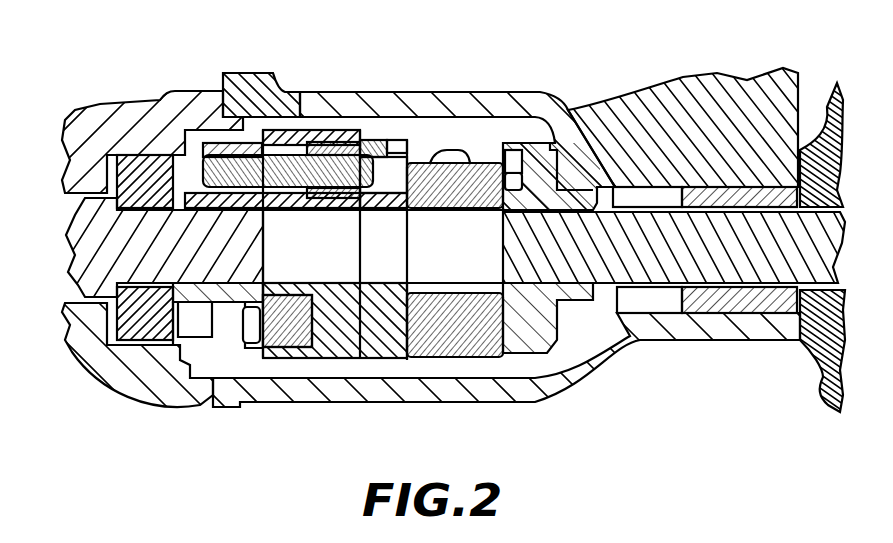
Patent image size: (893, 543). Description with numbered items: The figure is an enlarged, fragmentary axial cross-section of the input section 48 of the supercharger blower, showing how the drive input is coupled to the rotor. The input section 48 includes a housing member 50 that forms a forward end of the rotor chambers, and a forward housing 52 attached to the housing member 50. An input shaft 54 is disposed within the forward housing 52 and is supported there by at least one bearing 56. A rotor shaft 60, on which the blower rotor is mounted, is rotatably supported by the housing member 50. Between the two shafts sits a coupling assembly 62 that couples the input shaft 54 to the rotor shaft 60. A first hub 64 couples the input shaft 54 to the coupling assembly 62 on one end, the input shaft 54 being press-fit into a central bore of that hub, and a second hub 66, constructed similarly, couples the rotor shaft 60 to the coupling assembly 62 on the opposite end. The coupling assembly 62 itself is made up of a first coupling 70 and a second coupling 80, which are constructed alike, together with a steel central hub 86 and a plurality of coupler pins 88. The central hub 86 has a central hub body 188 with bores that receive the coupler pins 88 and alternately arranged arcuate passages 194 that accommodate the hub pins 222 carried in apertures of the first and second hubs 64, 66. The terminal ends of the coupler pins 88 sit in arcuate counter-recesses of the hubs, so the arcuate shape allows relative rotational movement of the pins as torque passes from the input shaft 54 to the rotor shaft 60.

The input section 48 is at (150, 83).
The housing member 50 is at (117, 128).
The forward housing 52 is at (630, 137).
The input shaft 54 is at (643, 243).
The bearing 56 is at (740, 300).
The rotor shaft 60 is at (93, 248).
The coupling assembly 62 is at (405, 127).
The first hub 64 is at (540, 160).
The second hub 66 is at (250, 147).
The first coupling 70 is at (300, 130).
The second coupling 80 is at (460, 172).
The central hub 86 is at (372, 145).
The coupler pins 88 is at (514, 185).
The central hub body 188 is at (258, 316).
The arcuate passages 194 is at (382, 163).
The hub pins 222 is at (287, 175).